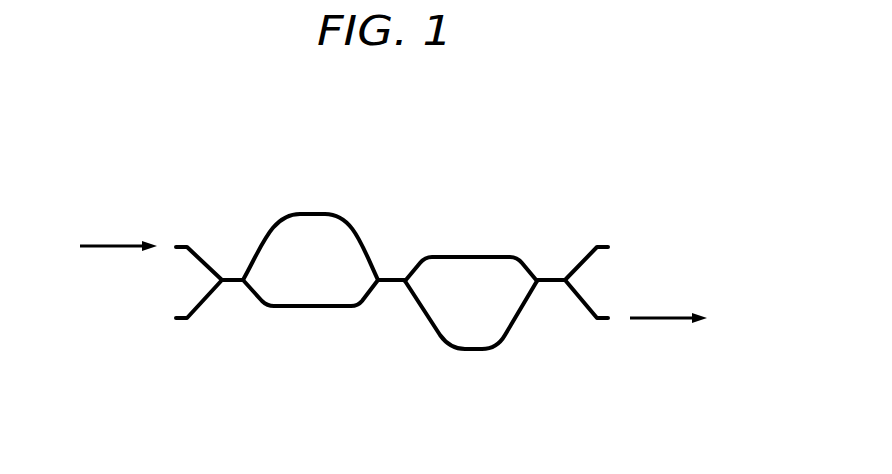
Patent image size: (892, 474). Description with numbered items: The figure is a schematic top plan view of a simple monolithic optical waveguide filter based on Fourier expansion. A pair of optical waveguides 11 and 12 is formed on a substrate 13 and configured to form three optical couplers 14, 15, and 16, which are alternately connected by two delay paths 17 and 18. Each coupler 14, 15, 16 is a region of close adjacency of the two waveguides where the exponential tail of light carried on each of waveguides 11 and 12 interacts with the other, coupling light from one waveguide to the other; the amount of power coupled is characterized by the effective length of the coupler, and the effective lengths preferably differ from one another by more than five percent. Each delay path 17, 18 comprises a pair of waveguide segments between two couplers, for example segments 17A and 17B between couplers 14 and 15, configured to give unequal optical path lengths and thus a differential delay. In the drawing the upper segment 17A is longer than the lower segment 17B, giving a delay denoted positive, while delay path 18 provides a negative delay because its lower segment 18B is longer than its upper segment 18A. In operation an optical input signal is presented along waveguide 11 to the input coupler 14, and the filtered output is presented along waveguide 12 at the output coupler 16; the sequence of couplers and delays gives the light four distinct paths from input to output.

The optical waveguide 11 is at (174, 246).
The optical waveguide 12 is at (178, 320).
The substrate 13 is at (600, 133).
The optical coupler 14 is at (231, 256).
The optical coupler 15 is at (392, 254).
The optical coupler 16 is at (551, 254).
The delay path 17 is at (310, 218).
The upper segment 17A is at (273, 238).
The lower segment 17B is at (270, 302).
The delay path 18 is at (471, 263).
The upper segment 18A is at (442, 258).
The lower segment 18B is at (445, 339).